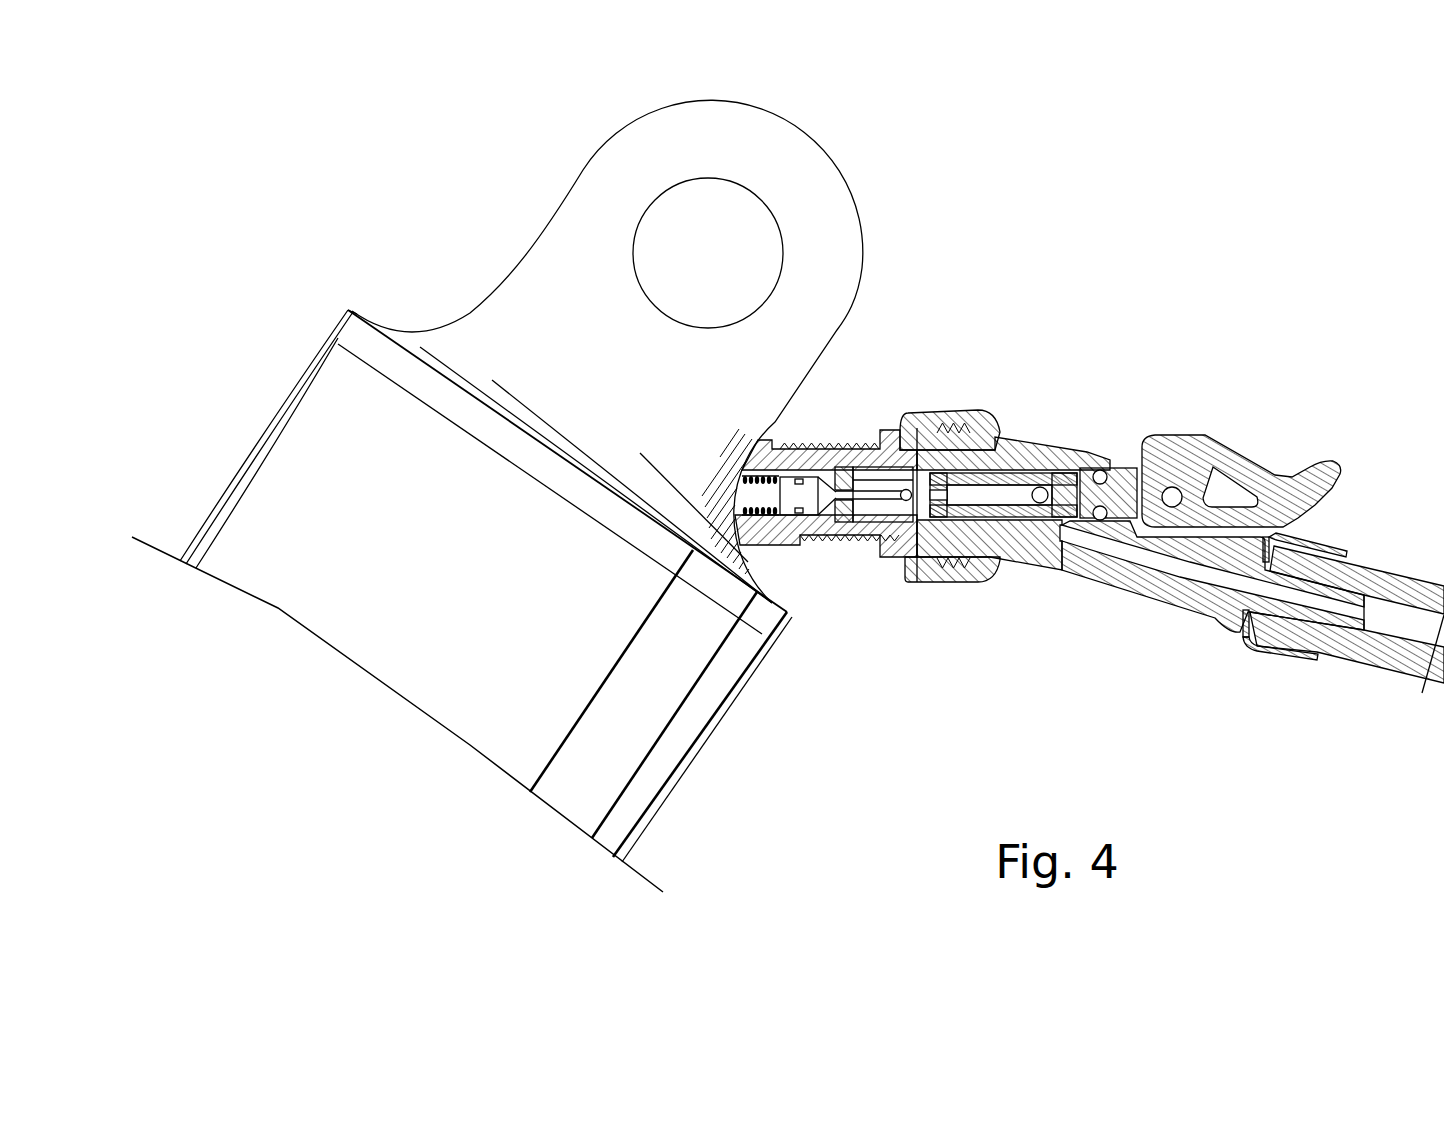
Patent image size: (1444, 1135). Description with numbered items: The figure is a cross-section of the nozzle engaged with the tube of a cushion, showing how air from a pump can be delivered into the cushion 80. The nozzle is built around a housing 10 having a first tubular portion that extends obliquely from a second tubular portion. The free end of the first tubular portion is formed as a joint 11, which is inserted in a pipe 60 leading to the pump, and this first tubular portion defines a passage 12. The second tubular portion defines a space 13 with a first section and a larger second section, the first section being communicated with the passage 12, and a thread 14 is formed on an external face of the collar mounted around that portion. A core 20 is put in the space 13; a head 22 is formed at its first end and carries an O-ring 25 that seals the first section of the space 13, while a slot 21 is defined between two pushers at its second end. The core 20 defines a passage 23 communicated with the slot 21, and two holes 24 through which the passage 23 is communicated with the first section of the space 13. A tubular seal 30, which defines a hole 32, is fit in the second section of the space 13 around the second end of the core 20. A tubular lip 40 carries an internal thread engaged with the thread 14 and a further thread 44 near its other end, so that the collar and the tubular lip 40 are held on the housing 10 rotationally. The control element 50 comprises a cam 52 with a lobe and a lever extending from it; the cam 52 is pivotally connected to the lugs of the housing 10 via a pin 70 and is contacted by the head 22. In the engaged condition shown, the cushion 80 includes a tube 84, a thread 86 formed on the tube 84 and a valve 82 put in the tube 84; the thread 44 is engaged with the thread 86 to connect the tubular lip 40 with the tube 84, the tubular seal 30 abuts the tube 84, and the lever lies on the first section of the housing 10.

The housing 10 is at (1057, 455).
The joint 11 is at (1313, 617).
The passage 12 is at (1280, 600).
The space 13 is at (978, 430).
The thread 14 is at (938, 428).
The core 20 is at (1065, 477).
The slot 21 is at (948, 497).
The head 22 is at (1130, 520).
The passage 23 is at (1007, 497).
The holes 24 is at (1058, 520).
The O-ring 25 is at (1102, 470).
The tubular seal 30 is at (923, 533).
The hole 32 is at (920, 482).
The tubular lip 40 is at (912, 560).
The thread 44 is at (866, 545).
The control element 50 is at (1258, 468).
The cam 52 is at (1155, 448).
The pipe 60 is at (1397, 583).
The pin 70 is at (1178, 490).
The cushion 80 is at (565, 238).
The valve 82 is at (873, 495).
The tube 84 is at (807, 538).
The thread 86 is at (832, 452).